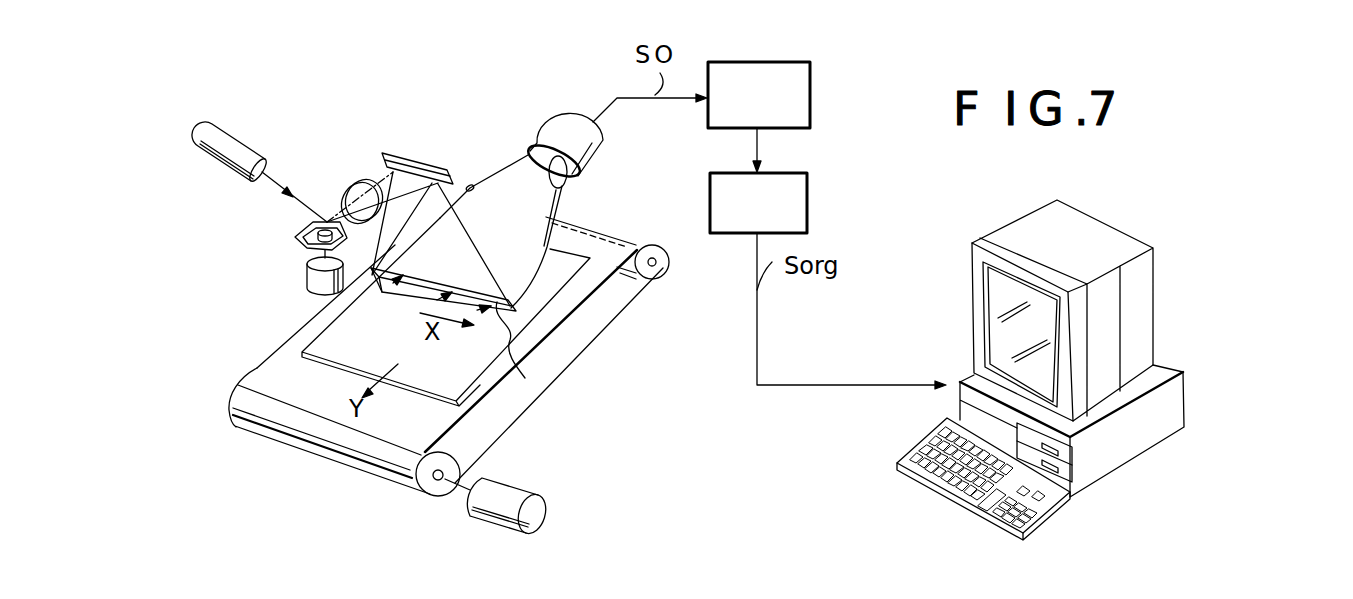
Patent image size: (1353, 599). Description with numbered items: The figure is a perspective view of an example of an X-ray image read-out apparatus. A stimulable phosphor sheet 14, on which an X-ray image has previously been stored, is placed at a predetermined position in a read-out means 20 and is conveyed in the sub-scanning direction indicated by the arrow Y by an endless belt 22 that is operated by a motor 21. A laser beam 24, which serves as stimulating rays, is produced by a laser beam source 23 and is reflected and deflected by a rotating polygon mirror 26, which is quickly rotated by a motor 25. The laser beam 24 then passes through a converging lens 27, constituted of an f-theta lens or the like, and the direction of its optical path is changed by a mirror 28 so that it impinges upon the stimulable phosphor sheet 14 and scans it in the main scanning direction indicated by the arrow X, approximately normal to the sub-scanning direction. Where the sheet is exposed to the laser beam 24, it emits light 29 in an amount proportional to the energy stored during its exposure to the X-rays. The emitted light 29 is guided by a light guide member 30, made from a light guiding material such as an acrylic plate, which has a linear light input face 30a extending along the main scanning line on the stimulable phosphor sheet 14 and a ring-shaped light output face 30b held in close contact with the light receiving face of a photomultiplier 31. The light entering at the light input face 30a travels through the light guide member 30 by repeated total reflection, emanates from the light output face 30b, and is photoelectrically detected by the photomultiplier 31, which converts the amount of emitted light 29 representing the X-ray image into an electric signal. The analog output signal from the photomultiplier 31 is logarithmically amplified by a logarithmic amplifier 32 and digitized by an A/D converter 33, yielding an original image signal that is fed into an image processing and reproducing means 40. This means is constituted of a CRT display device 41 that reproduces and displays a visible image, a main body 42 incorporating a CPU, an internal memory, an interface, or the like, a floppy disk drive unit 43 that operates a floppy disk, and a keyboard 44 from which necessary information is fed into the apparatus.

The stimulable phosphor sheet 14 is at (512, 375).
The read-out means 20 is at (404, 125).
The motor 21 is at (518, 487).
The endless belt 22 is at (450, 417).
The laser beam source 23 is at (233, 143).
The laser beam 24 is at (280, 183).
The motor 25 is at (314, 277).
The rotating polygon mirror 26 is at (296, 235).
The converging lens 27 is at (347, 181).
The mirror 28 is at (438, 175).
The emitted light 29 is at (400, 283).
The light guide member 30 is at (500, 190).
The linear light input face 30a is at (520, 345).
The ring-shaped light output face 30b is at (568, 186).
The photomultiplier 31 is at (562, 114).
The logarithmic amplifier 32 is at (792, 62).
The A/D converter 33 is at (808, 174).
The image processing and reproducing means 40 is at (1146, 197).
The CRT display device 41 is at (1007, 255).
The main body 42 is at (1170, 400).
The floppy disk drive unit 43 is at (1054, 452).
The keyboard 44 is at (907, 470).